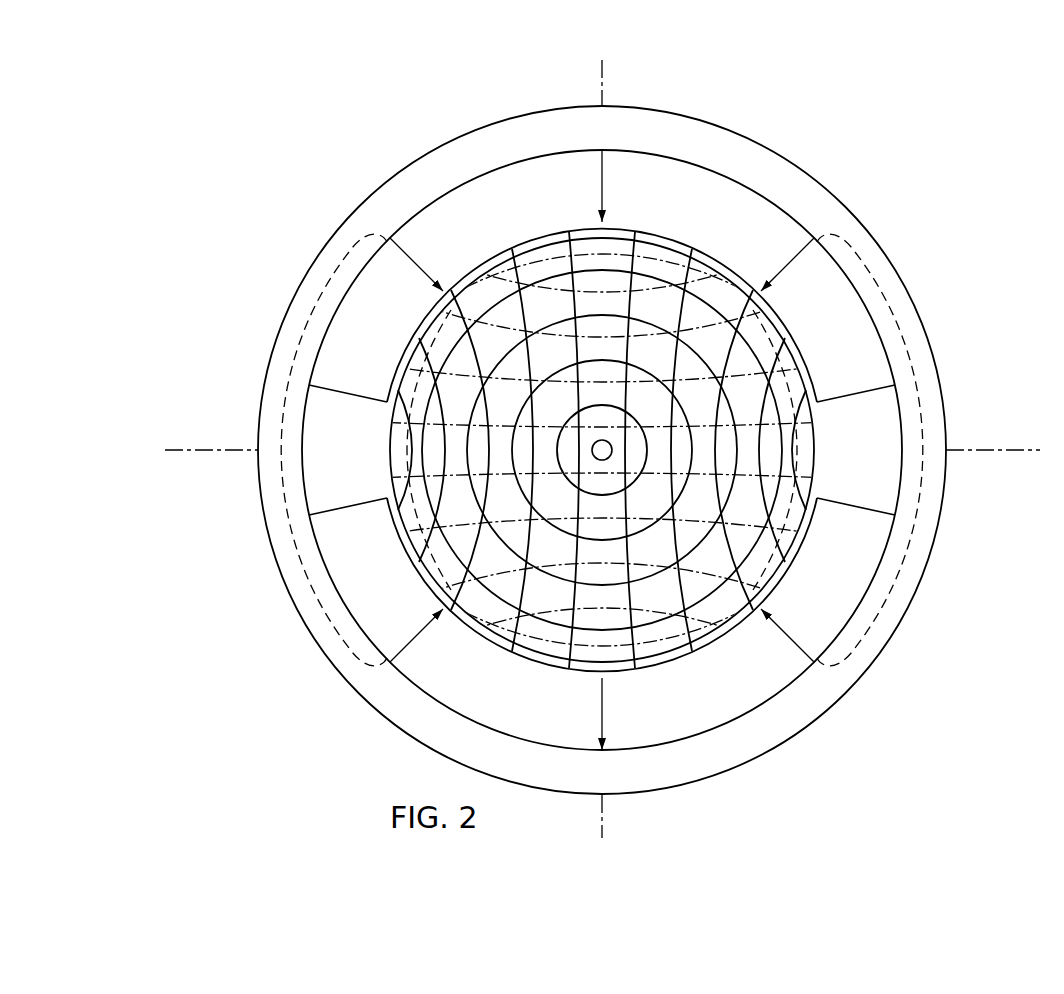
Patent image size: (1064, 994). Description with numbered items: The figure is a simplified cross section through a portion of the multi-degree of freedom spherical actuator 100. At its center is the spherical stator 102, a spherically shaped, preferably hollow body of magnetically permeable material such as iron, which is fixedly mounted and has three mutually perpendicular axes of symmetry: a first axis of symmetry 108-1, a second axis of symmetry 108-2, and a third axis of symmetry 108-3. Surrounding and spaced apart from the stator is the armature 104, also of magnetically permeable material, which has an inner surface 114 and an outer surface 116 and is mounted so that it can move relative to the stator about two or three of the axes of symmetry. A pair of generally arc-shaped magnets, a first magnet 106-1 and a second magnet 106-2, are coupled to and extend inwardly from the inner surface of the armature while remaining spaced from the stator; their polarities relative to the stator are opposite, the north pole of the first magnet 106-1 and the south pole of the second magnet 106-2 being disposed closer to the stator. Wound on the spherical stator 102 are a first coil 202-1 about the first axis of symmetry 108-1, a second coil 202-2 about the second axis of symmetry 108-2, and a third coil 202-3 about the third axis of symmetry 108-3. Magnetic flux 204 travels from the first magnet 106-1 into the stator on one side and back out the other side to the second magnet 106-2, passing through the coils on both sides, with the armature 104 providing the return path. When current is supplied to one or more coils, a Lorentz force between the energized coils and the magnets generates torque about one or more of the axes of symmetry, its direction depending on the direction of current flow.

The multi-degree of freedom spherical actuator 100 is at (949, 198).
The spherical stator 102 is at (522, 249).
The armature 104 is at (789, 157).
The first magnet 106-1 is at (428, 206).
The second magnet 106-2 is at (770, 688).
The first axis of symmetry 108-1 is at (1004, 447).
The second axis of symmetry 108-2 is at (598, 70).
The third axis of symmetry 108-3 is at (613, 450).
The inner surface 114 is at (655, 158).
The outer surface 116 is at (838, 200).
The first coil 202-1 is at (795, 450).
The second coil 202-2 is at (560, 644).
The third coil 202-3 is at (656, 274).
The magnetic flux 204 is at (318, 302).